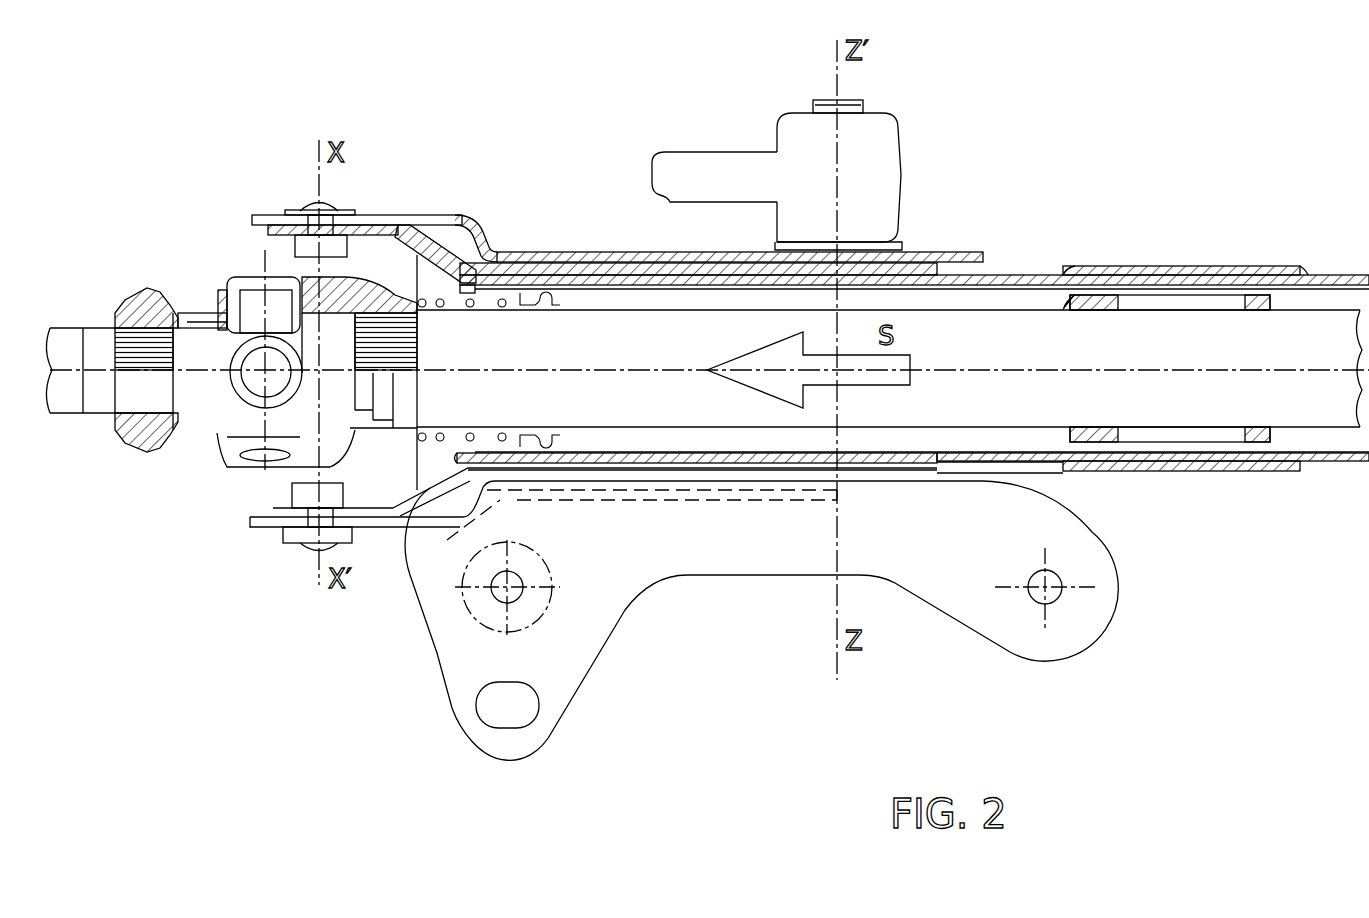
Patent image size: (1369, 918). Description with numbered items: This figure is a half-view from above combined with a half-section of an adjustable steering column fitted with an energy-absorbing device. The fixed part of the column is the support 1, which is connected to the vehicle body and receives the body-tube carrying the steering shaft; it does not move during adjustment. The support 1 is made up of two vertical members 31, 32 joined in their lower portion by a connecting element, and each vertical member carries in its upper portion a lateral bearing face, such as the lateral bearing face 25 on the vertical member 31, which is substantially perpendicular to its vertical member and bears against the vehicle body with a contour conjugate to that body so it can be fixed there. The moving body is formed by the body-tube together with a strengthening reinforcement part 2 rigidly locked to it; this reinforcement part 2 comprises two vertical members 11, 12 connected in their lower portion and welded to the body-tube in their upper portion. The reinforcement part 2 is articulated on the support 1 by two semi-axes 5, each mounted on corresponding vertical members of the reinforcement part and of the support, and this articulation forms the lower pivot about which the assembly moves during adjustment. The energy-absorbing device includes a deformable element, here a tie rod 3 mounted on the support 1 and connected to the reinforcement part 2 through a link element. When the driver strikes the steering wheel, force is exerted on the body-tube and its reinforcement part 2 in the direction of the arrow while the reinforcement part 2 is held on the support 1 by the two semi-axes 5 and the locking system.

The support 1 is at (247, 521).
The reinforcement part 2 is at (452, 250).
The tie rod 3 is at (270, 535).
The semi-axis 5 is at (300, 212).
The vertical member 11 is at (670, 470).
The vertical member 12 is at (628, 270).
The lateral bearing face 25 is at (583, 643).
The vertical member 31 is at (612, 483).
The vertical member 32 is at (575, 262).